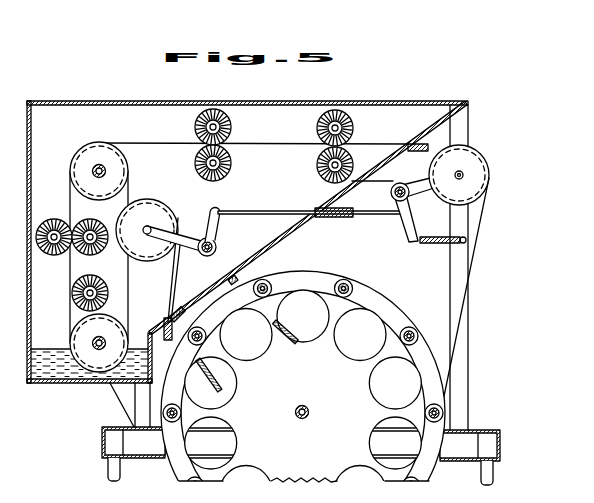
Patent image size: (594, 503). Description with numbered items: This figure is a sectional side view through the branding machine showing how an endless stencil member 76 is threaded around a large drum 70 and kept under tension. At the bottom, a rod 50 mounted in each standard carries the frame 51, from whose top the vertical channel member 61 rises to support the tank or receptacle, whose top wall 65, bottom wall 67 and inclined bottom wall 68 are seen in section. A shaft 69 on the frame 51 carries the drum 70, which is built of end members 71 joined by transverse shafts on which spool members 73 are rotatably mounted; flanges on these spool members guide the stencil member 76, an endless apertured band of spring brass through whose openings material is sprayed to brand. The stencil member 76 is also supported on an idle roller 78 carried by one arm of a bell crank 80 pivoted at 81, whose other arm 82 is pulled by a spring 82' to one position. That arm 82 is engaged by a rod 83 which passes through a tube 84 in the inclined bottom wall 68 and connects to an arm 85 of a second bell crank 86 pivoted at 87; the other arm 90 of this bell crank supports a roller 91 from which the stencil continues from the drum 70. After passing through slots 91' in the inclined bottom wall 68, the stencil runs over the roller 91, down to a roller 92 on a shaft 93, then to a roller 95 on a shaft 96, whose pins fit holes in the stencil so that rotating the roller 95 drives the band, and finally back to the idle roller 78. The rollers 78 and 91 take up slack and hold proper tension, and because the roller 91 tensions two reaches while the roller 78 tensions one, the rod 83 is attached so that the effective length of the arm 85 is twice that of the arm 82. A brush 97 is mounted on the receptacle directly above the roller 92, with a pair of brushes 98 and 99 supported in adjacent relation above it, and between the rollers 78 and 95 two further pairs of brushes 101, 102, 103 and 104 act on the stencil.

The rod 50 is at (108, 468).
The frame 51 is at (102, 446).
The vertical channel member 61 is at (466, 323).
The top wall 65 is at (173, 103).
The bottom wall 67 is at (58, 384).
The inclined bottom wall 68 is at (297, 233).
The shaft 69 is at (306, 408).
The drum 70 is at (396, 311).
The end member 71 is at (284, 474).
The spool member 73 is at (350, 279).
The stencil member 76 is at (478, 243).
The idle roller 78 is at (488, 168).
The bell crank 80 is at (423, 181).
The pivot 81 is at (400, 184).
The arm 82 is at (399, 220).
The spring 82' is at (443, 252).
The rod 83 is at (278, 211).
The tube 84 is at (340, 218).
The arm 85 is at (221, 226).
The bell crank 86 is at (175, 253).
The pivot 87 is at (214, 249).
The arm 90 is at (185, 234).
The roller 91 is at (147, 224).
The slot 91' is at (164, 321).
The roller 92 is at (82, 330).
The shaft 93 is at (93, 343).
The roller 95 is at (86, 150).
The shaft 96 is at (93, 167).
The brush 97 is at (91, 280).
The brush 98 is at (54, 220).
The brush 99 is at (90, 221).
The brush 101 is at (196, 125).
The brush 102 is at (196, 163).
The brush 103 is at (320, 124).
The brush 104 is at (319, 170).